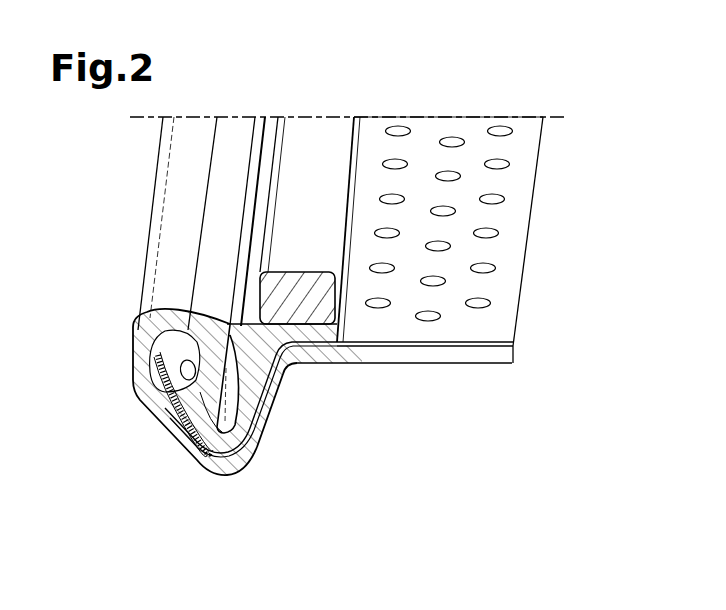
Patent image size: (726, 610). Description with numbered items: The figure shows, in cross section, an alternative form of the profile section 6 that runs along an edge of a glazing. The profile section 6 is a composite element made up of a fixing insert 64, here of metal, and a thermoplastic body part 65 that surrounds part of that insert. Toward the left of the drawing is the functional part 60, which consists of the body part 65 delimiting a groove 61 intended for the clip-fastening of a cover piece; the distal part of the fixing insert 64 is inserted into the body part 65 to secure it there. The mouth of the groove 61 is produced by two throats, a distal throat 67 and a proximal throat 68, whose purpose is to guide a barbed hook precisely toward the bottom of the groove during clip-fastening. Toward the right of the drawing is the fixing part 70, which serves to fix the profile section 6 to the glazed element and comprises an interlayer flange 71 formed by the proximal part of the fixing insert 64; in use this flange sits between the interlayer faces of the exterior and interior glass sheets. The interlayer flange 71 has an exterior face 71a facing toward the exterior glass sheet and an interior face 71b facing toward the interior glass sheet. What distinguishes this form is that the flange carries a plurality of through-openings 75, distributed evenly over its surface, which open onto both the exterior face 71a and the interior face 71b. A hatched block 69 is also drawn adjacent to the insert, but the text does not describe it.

The profile section 6 is at (578, 181).
The functional part 60 is at (276, 470).
The groove 61 is at (177, 430).
The fixing insert 64 is at (290, 388).
The body part 65 is at (197, 470).
The distal throat 67 is at (196, 385).
The proximal throat 68 is at (232, 320).
The support block 69 is at (272, 291).
The fixing part 70 is at (338, 359).
The interlayer flange 71 is at (503, 321).
The exterior face 71a is at (524, 132).
The interior face 71b is at (497, 356).
The through-openings 75 is at (485, 266).